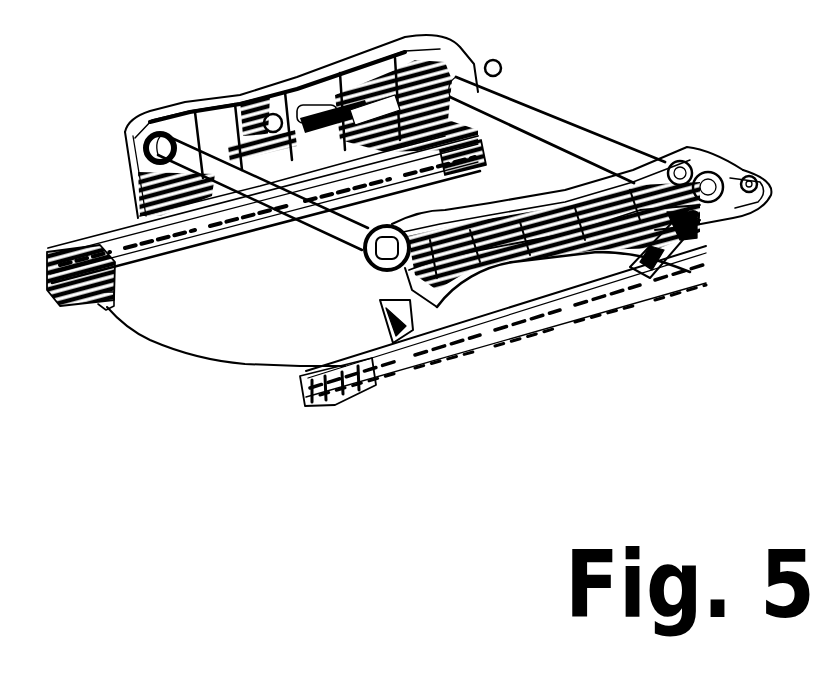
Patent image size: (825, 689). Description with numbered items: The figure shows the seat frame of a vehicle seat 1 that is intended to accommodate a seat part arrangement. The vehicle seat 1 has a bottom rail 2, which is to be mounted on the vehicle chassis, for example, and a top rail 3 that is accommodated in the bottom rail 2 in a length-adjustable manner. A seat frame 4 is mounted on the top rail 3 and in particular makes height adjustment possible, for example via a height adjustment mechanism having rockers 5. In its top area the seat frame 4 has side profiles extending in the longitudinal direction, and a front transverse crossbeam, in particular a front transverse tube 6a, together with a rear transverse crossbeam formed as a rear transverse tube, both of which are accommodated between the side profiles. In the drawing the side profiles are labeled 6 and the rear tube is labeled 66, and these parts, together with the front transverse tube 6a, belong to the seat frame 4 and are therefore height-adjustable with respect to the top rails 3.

The vehicle seat 1 is at (96, 450).
The bottom rail 2 is at (427, 367).
The top rail 3 is at (310, 397).
The seat frame 4 is at (713, 230).
The rocker 5 is at (385, 313).
The frame side member 6 is at (687, 148).
The front transverse tube 6a is at (137, 153).
The rear cross tube 66 is at (577, 127).